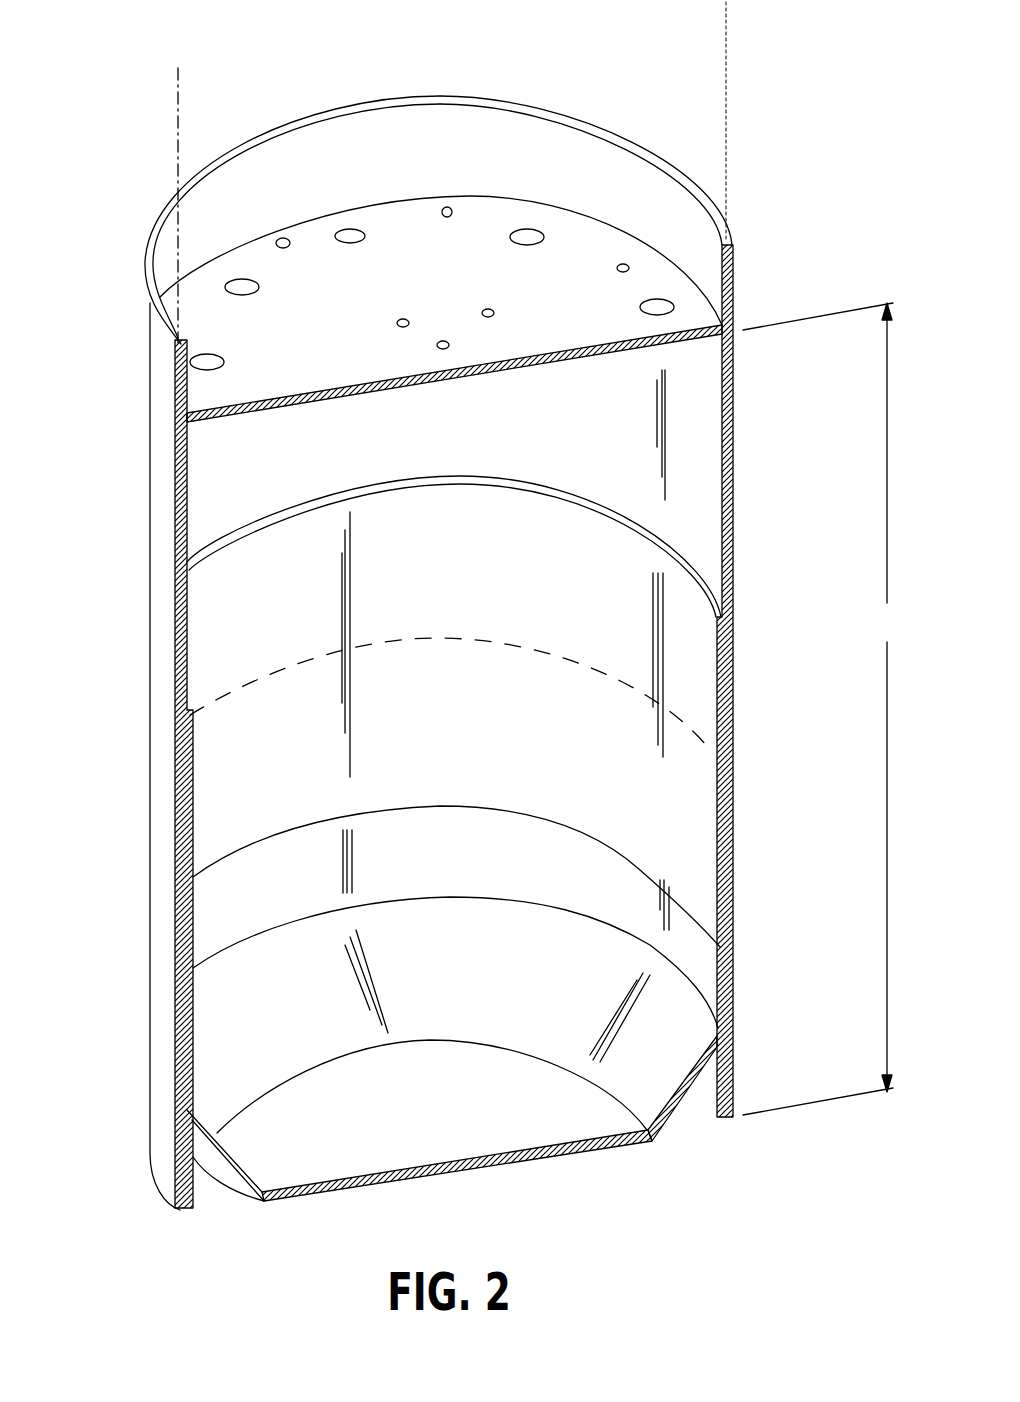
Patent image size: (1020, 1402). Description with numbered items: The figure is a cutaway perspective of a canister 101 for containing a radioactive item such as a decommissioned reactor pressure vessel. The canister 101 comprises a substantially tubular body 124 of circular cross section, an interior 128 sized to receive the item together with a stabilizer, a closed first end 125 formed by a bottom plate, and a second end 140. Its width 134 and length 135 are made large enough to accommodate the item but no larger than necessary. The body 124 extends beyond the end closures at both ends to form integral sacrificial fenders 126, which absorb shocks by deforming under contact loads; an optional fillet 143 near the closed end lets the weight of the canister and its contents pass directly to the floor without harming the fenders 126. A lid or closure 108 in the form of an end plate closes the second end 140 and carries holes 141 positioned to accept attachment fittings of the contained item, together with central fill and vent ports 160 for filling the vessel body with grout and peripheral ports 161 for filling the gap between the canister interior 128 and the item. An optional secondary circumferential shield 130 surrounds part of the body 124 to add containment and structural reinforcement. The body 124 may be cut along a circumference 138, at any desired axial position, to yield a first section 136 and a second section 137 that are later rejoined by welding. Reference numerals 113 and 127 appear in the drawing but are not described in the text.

The canister 101 is at (757, 427).
The lid or closure 108 is at (640, 290).
The cylindrical wall 113 is at (407, 296).
The tubular body 124 is at (738, 555).
The first end 125 is at (430, 1155).
The sacrificial fenders 126 is at (593, 157).
The perforated top plate 127 is at (315, 368).
The interior 128 is at (451, 623).
The secondary circumferential shield 130 is at (395, 733).
The width 134 is at (722, 6).
The length 135 is at (826, 709).
The first section 136 is at (703, 965).
The second section 137 is at (722, 485).
The circumference 138 is at (670, 733).
The second end 140 is at (696, 153).
The holes 141 is at (232, 283).
The fillet 143 is at (220, 1057).
The central fill and vent ports 160 is at (733, 315).
The peripheral fill and vent ports 161 is at (449, 208).